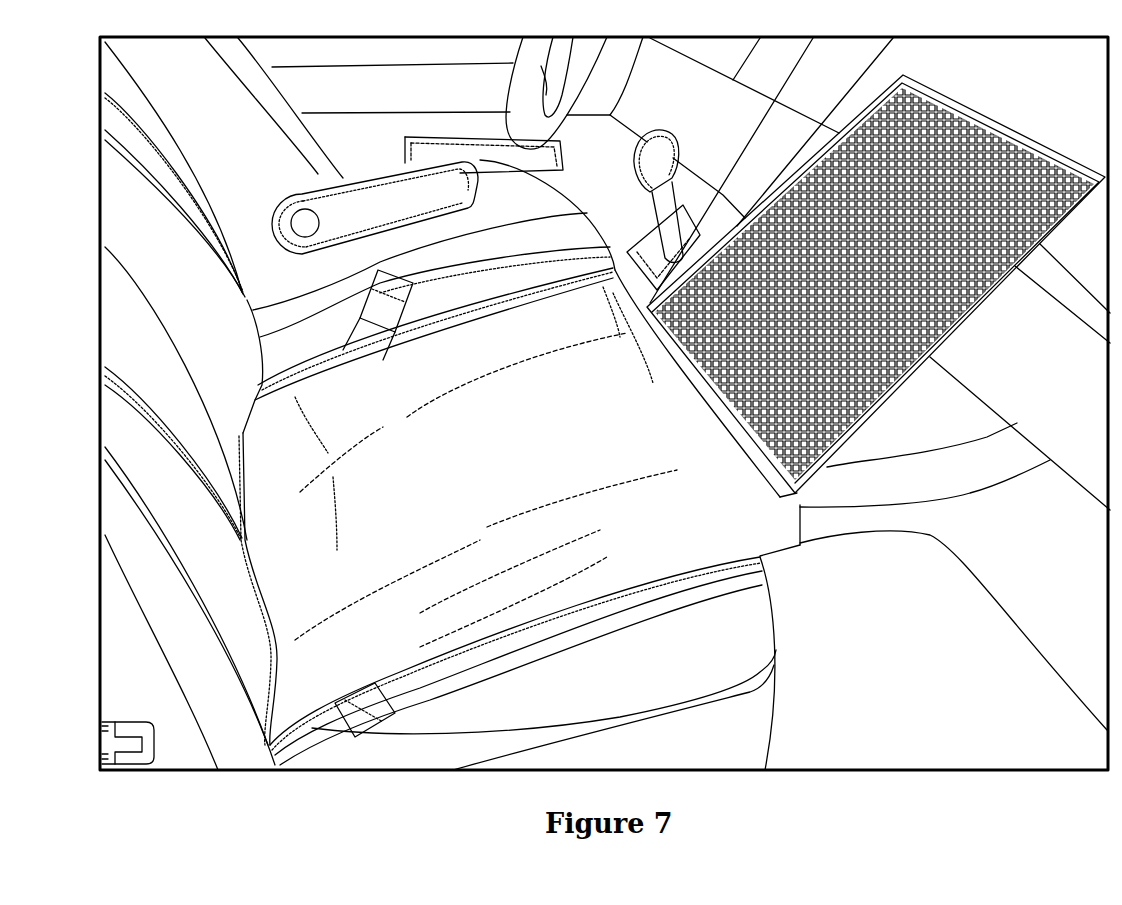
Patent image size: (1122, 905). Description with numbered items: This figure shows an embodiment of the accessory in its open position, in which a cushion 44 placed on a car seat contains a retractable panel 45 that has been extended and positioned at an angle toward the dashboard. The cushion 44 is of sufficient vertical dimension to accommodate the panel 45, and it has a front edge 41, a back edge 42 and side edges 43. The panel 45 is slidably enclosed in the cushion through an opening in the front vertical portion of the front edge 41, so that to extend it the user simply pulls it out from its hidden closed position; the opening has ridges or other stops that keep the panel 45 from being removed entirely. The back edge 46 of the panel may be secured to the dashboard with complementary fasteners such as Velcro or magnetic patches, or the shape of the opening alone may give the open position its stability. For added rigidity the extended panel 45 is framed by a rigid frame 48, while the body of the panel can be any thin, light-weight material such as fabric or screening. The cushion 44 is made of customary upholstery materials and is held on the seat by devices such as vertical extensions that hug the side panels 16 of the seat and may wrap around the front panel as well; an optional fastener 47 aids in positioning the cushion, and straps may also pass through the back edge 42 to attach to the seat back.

The side panels of the seat 16 is at (762, 623).
The front edge 41 is at (715, 395).
The back edge 42 is at (256, 538).
The side edges 43 is at (469, 326).
The cushion 44 is at (420, 463).
The retractable panel 45 is at (932, 356).
The back edge of the panel 46 is at (957, 100).
The fastener 47 is at (362, 700).
The rigid frame 48 is at (1037, 142).